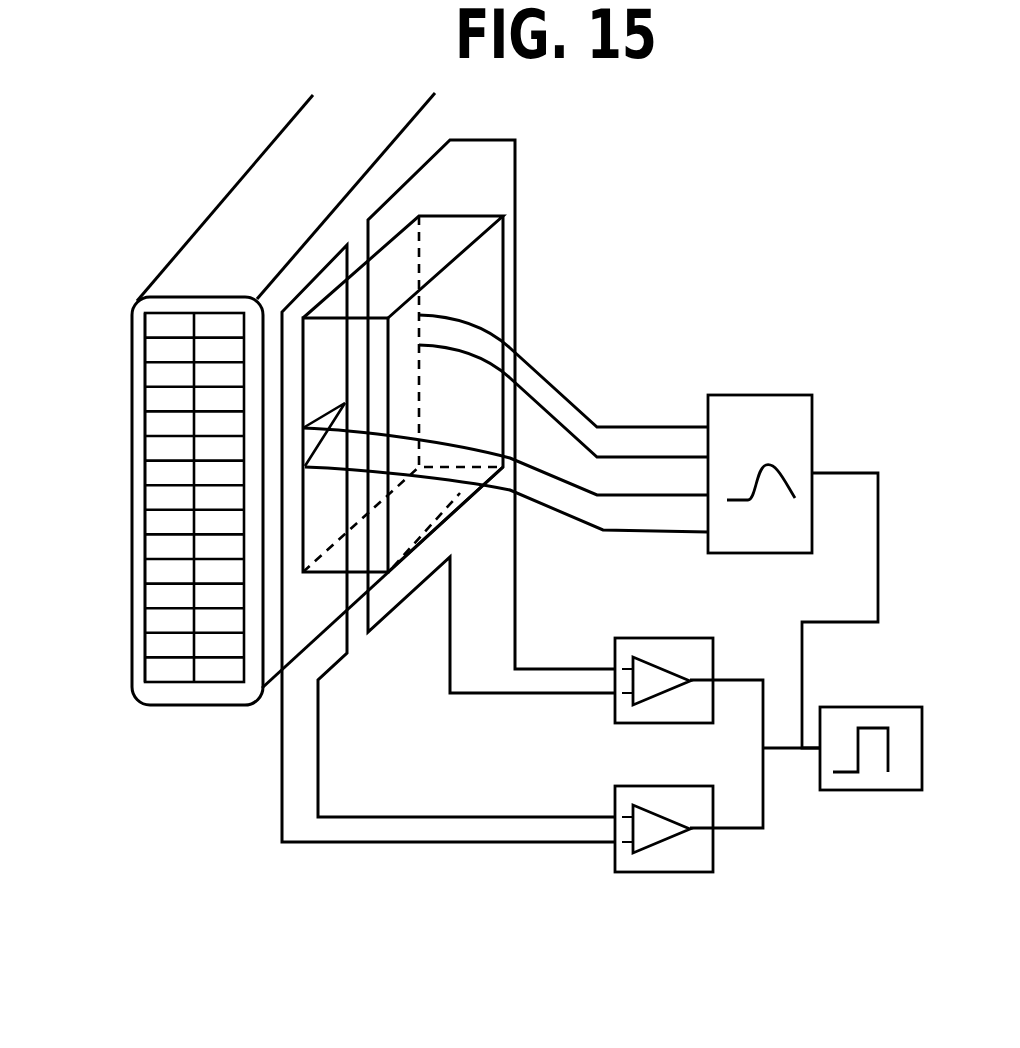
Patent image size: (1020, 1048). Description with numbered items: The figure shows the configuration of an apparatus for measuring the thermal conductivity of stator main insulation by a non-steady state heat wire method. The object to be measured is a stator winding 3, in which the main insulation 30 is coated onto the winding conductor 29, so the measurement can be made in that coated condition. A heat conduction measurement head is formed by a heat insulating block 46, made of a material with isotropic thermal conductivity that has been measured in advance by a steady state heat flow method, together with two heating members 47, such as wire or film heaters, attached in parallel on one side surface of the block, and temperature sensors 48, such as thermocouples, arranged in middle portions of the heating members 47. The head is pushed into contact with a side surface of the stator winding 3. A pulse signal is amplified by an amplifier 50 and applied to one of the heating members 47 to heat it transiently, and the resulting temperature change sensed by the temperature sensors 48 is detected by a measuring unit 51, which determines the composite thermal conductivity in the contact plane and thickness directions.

The stator winding 3 is at (132, 608).
The winding conductor 29 is at (155, 374).
The main insulation 30 is at (135, 458).
The heat insulating block 46 is at (456, 222).
The heating members 47 is at (366, 268).
The temperature sensors 48 is at (345, 403).
The amplifier 50 is at (672, 638).
The measuring unit 51 is at (762, 394).